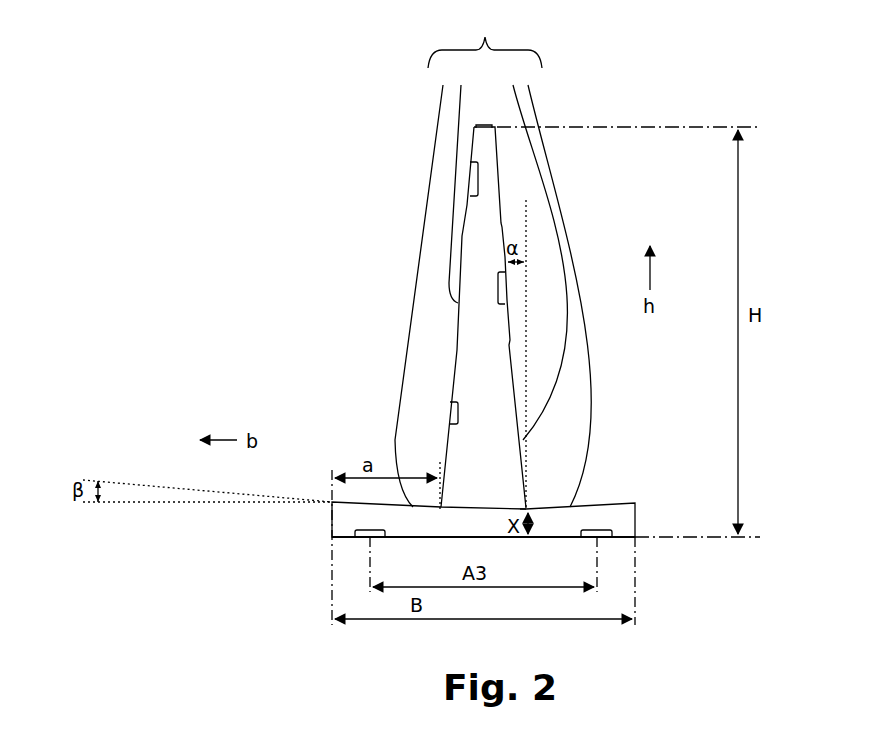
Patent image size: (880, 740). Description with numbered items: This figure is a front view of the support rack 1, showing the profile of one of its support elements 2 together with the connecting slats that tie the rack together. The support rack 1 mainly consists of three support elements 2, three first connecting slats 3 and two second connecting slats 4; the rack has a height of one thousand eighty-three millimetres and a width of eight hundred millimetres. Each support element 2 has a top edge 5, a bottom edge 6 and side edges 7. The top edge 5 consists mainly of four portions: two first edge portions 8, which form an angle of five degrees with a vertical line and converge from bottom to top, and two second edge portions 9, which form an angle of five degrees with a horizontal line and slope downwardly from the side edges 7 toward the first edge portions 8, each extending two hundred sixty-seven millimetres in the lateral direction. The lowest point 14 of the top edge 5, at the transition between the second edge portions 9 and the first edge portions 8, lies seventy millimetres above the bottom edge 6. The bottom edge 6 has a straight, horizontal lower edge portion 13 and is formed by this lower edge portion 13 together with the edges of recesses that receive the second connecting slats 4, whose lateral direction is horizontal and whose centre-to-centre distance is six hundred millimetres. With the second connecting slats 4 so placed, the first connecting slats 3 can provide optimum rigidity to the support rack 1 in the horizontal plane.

The support rack 1 is at (170, 186).
The support element 2 is at (457, 467).
The first connecting slat 3 is at (500, 305).
The second connecting slat 4 is at (357, 532).
The top edge 5 is at (476, 125).
The bottom edge 6 is at (410, 540).
The side edge 7 is at (332, 522).
The first edge portion 8 is at (508, 250).
The second edge portion 9 is at (493, 284).
The lower edge portion 13 is at (333, 549).
The lowest point 14 is at (527, 508).